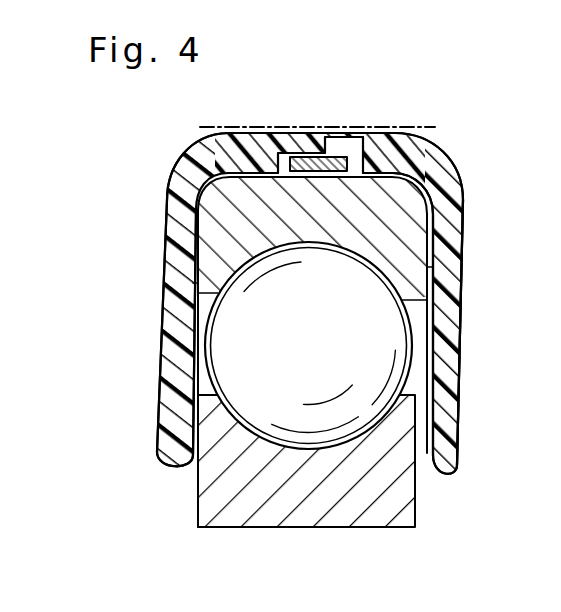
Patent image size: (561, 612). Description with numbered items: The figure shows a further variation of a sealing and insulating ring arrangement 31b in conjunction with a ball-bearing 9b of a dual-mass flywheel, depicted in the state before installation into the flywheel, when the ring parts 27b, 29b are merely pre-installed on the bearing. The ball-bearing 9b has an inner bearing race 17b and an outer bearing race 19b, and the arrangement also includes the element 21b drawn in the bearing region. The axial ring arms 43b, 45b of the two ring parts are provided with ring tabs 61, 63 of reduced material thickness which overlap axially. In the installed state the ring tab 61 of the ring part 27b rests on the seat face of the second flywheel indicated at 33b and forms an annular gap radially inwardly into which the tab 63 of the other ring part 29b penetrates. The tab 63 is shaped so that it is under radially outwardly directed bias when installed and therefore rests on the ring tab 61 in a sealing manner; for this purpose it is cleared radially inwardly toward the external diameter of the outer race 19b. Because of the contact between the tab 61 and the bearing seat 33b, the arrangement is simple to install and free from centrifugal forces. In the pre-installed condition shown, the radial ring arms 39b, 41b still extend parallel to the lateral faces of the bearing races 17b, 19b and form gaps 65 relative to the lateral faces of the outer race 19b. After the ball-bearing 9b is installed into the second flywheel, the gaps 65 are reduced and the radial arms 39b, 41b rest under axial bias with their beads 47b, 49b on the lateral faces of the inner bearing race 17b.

The ball-bearing 9b is at (386, 327).
The inner bearing race 17b is at (303, 517).
The outer bearing race 19b is at (237, 220).
The ball seat 21b is at (233, 338).
The ring part 27b is at (182, 180).
The ring part 29b is at (455, 182).
The sealing and insulating ring arrangement 31b is at (163, 248).
The seat face of the second flywheel 33b is at (385, 130).
The radial ring arm 39b is at (176, 393).
The radial ring arm 41b is at (450, 388).
The axial ring arm 43b is at (256, 150).
The axial ring arm 45b is at (385, 158).
The bead 47b is at (179, 460).
The bead 49b is at (420, 455).
The ring tab 61 is at (333, 146).
The tab 63 is at (390, 152).
The gaps 65 is at (425, 267).